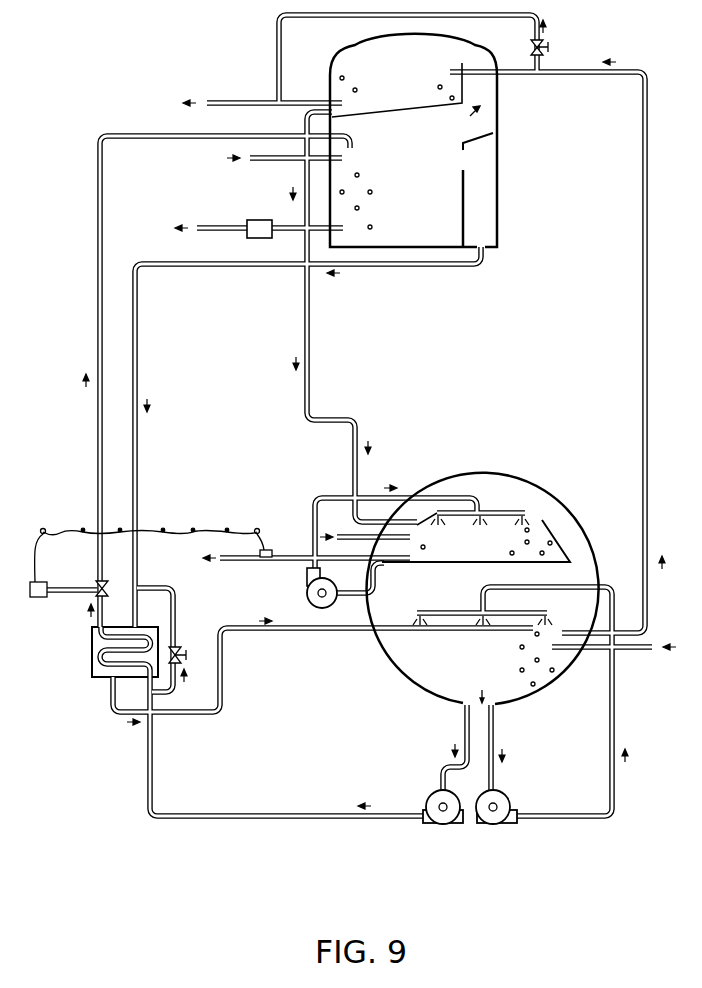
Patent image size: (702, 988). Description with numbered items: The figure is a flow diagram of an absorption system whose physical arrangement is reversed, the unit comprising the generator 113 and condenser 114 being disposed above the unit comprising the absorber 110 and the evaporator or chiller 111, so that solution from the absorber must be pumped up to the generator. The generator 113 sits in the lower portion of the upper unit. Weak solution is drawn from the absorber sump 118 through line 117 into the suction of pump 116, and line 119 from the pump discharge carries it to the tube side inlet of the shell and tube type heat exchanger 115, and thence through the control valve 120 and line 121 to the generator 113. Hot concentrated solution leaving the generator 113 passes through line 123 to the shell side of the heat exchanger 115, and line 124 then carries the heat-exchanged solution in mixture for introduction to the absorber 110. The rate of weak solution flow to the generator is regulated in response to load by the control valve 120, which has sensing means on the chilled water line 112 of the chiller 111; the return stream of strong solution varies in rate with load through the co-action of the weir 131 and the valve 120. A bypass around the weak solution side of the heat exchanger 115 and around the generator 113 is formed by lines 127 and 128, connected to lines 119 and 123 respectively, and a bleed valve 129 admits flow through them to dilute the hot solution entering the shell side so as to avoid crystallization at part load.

The absorber 110 is at (578, 598).
The evaporator or chiller 111 is at (542, 545).
The chilled water line 112 is at (297, 552).
The generator 113 is at (425, 215).
The condenser 114 is at (448, 53).
The shell and tube type heat exchanger 115 is at (92, 657).
The pump 116 is at (445, 819).
The line 117 is at (462, 726).
The absorber sump 118 is at (432, 673).
The line 119 is at (282, 819).
The control valve 120 is at (98, 584).
The line 121 is at (98, 435).
The line 123 is at (372, 266).
The line 124 is at (172, 714).
The line 127 is at (176, 688).
The line 128 is at (174, 603).
The bleed valve 129 is at (177, 650).
The weir 131 is at (465, 200).